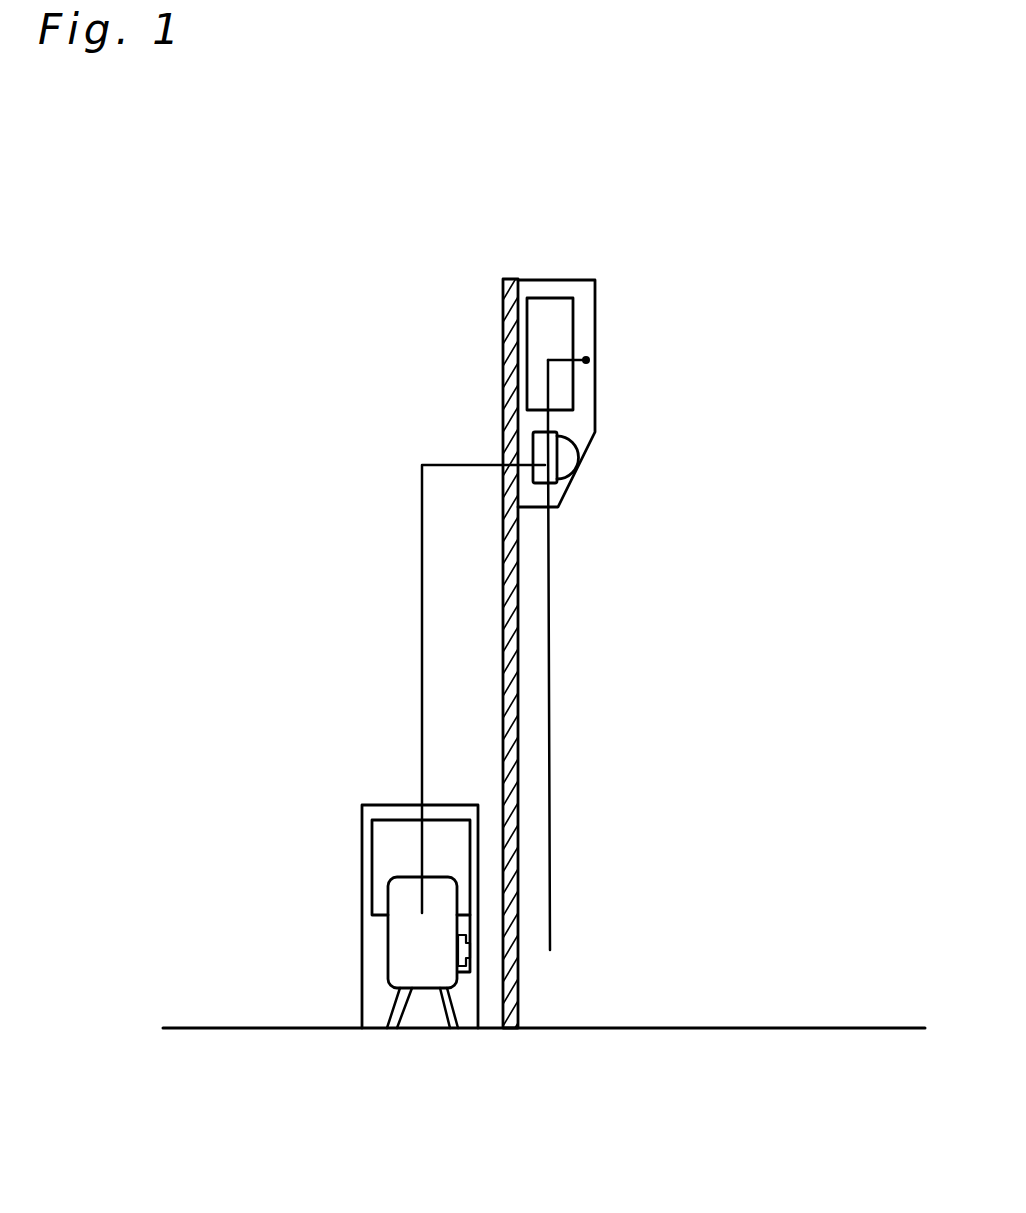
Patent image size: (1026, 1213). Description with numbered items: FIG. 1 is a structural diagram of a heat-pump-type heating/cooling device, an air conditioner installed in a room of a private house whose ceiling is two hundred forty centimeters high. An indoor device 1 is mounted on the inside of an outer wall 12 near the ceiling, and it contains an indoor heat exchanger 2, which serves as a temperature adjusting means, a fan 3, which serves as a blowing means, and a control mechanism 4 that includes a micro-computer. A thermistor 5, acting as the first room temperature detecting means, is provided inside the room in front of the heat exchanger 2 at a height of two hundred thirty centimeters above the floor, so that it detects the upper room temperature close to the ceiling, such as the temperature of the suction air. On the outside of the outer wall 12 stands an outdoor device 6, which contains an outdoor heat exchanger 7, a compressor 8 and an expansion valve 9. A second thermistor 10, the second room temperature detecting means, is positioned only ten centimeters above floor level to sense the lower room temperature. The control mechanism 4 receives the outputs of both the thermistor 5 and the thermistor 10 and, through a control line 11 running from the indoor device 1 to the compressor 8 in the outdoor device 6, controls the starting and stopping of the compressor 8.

The indoor device 1 is at (553, 280).
The indoor heat exchanger 2 is at (558, 325).
The fan 3 is at (568, 438).
The control mechanism 4 is at (549, 459).
The thermistor 5 is at (587, 358).
The outdoor device 6 is at (362, 810).
The outdoor heat exchanger 7 is at (382, 849).
The compressor 8 is at (395, 933).
The expansion valve 9 is at (470, 948).
The thermistor 10 is at (551, 950).
The control line 11 is at (422, 541).
The outer wall 12 is at (501, 345).